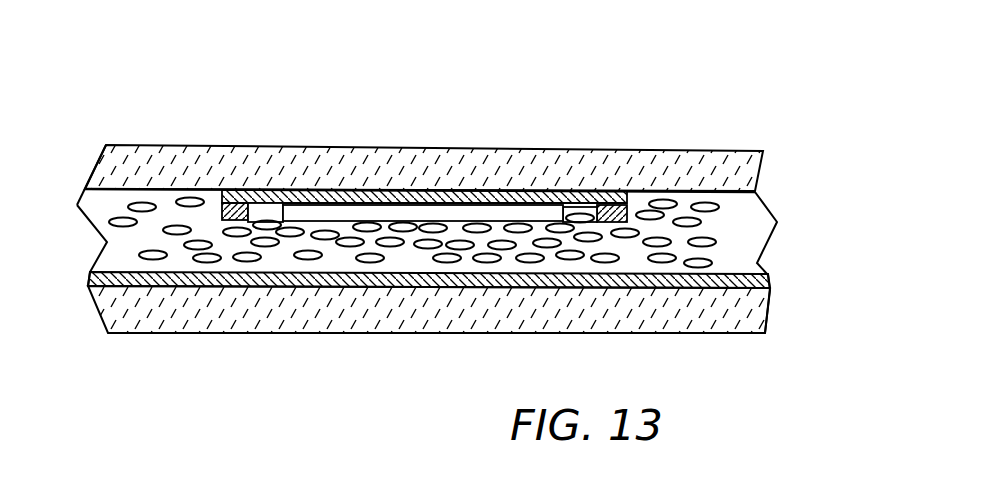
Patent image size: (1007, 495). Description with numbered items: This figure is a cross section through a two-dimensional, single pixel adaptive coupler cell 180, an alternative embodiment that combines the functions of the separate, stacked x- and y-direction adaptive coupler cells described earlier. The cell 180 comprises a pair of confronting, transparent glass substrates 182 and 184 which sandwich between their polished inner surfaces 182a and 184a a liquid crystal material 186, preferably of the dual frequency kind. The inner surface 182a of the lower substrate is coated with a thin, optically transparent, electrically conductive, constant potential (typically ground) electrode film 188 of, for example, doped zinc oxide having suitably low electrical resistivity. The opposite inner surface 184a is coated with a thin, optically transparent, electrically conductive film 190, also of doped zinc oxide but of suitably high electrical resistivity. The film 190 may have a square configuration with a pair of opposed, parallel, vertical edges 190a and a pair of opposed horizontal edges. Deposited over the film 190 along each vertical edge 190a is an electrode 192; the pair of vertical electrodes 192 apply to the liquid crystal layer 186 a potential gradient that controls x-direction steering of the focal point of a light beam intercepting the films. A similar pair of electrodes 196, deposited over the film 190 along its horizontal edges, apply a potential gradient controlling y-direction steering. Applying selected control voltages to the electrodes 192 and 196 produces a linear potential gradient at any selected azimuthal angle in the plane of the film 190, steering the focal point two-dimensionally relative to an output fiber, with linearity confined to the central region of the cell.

The adaptive coupler cell 180 is at (750, 50).
The glass substrate 182 is at (773, 303).
The inner surface 182a is at (730, 287).
The glass substrate 184 is at (762, 168).
The inner surface 184a is at (737, 196).
The liquid crystal material 186 is at (407, 255).
The electrode film 188 is at (773, 277).
The conductive film 190 is at (337, 198).
The vertical edges 190a is at (218, 197).
The electrode 192 is at (218, 213).
The electrode 196 is at (457, 212).